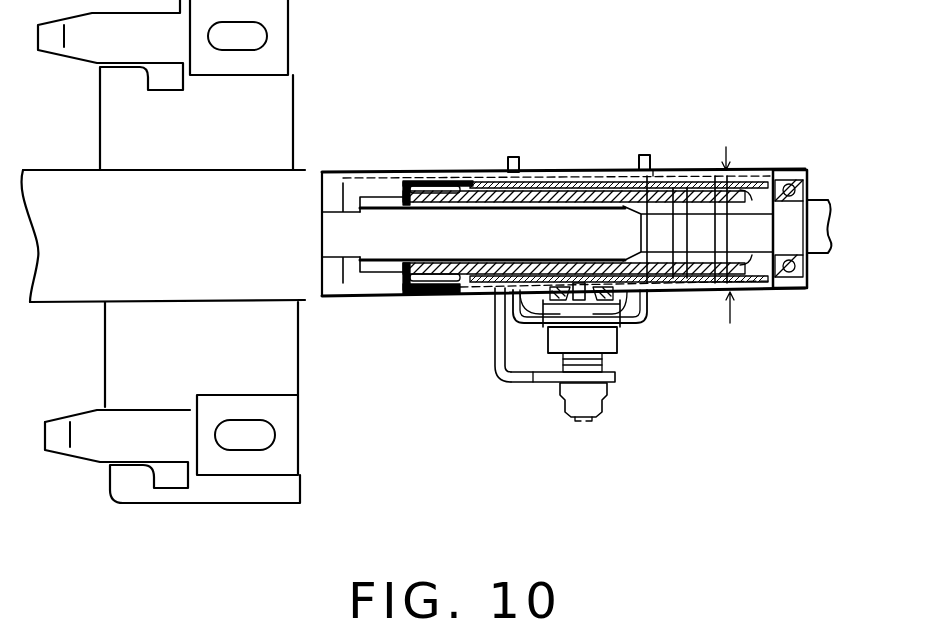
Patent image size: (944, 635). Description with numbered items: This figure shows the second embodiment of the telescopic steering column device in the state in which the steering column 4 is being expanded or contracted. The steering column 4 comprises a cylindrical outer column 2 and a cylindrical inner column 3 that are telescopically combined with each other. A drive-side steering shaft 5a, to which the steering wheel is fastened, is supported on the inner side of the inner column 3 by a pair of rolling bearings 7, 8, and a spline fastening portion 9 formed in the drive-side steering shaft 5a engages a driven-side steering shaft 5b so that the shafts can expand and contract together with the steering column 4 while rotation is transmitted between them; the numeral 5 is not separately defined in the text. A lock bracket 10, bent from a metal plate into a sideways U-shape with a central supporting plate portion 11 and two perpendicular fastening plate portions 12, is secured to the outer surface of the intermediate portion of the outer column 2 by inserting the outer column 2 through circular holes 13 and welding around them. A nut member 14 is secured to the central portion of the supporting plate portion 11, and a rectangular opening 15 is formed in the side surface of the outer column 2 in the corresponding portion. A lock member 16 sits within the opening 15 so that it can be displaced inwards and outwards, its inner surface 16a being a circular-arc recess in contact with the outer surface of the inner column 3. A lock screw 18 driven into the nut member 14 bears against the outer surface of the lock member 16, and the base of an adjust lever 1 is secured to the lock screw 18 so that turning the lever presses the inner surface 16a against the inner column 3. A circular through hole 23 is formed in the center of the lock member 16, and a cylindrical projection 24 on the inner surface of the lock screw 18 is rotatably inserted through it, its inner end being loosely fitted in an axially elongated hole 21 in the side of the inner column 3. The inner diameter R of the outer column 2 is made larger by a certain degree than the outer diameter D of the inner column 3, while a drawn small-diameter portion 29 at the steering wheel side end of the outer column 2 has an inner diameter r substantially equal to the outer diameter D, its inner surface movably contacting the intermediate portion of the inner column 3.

The adjust lever 1 is at (533, 380).
The outer column 2 is at (352, 168).
The inner column 3 is at (748, 290).
The steering column 4 is at (311, 268).
The nut 5 is at (353, 290).
The drive-side steering shaft 5a is at (718, 290).
The driven-side steering shaft 5b is at (390, 290).
The rolling bearing 7 is at (792, 170).
The rolling bearing 8 is at (418, 168).
The spline fastening portion 9 is at (467, 168).
The lock bracket 10 is at (642, 325).
The supporting plate portion 11 is at (627, 333).
The fastening plate portion 12 is at (638, 170).
The circular hole 13 is at (653, 170).
The nut member 14 is at (580, 343).
The rectangular opening 15 is at (527, 383).
The lock member 16 is at (593, 383).
The inner surface 16a is at (527, 168).
The lock screw 18 is at (563, 360).
The elongated hole 21 is at (500, 380).
The circular through hole 23 is at (648, 315).
The cylindrical projection 24 is at (563, 300).
The drawn small-diameter portion 29 is at (690, 292).
The inner diameter of the outer column R is at (578, 285).
The inner diameter of the drawn small-diameter portion r is at (685, 170).
The outer diameter of the inner column D is at (743, 170).